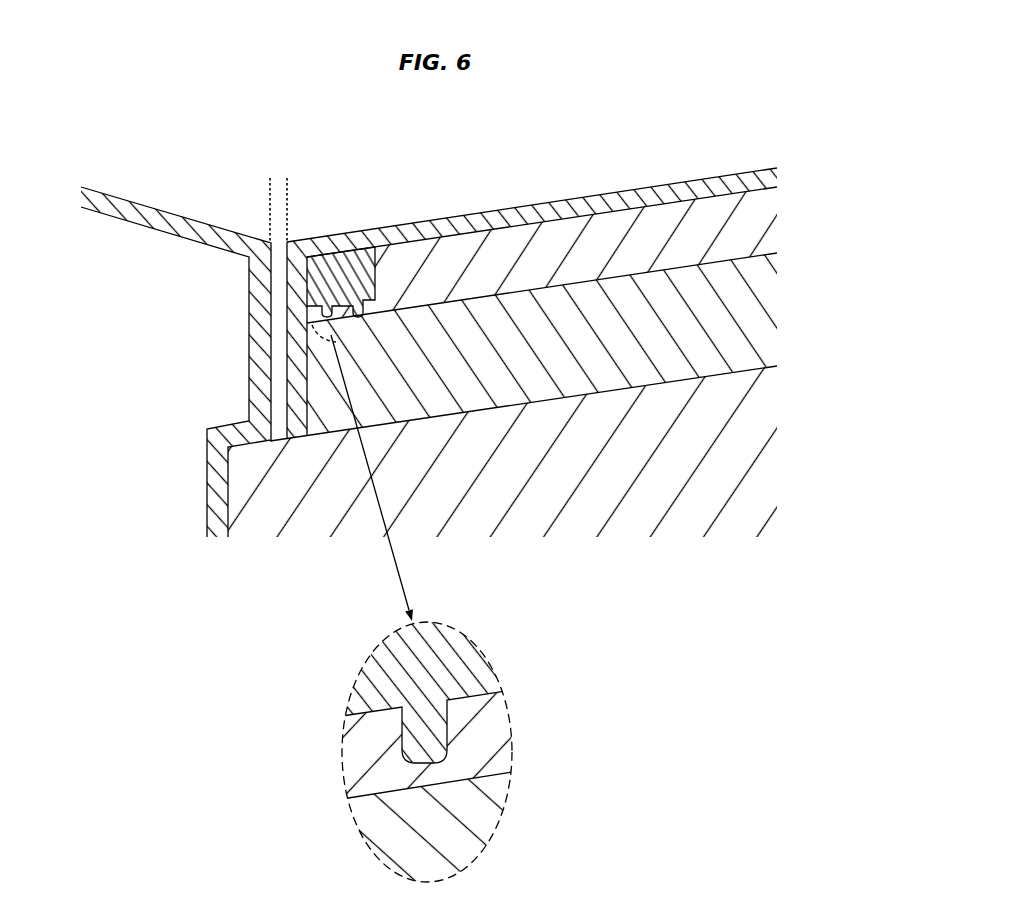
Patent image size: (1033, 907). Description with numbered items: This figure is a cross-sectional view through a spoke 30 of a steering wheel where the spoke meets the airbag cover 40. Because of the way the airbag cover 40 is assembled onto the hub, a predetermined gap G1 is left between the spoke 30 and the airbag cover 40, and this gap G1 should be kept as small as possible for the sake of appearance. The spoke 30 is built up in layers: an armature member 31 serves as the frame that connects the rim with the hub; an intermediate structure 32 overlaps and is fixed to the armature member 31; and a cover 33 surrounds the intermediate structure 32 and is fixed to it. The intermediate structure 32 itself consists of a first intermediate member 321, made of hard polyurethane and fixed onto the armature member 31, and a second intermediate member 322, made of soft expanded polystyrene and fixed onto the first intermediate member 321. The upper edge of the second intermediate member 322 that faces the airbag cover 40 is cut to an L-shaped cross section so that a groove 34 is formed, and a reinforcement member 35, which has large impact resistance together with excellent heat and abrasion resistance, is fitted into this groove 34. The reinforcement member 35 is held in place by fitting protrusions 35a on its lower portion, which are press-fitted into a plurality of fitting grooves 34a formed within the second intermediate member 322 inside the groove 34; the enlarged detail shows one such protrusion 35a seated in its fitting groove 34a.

The spoke 30 is at (641, 183).
The armature member 31 is at (633, 505).
The intermediate structure 32 is at (542, 501).
The first intermediate member 321 is at (553, 310).
The second intermediate member 322 is at (478, 252).
The cover 33 is at (717, 181).
The groove 34 is at (362, 263).
The fitting groove 34a is at (498, 708).
The reinforcement member 35 is at (328, 260).
The fitting protrusion 35a is at (407, 732).
The airbag cover 40 is at (146, 208).
The gap G1 is at (245, 186).